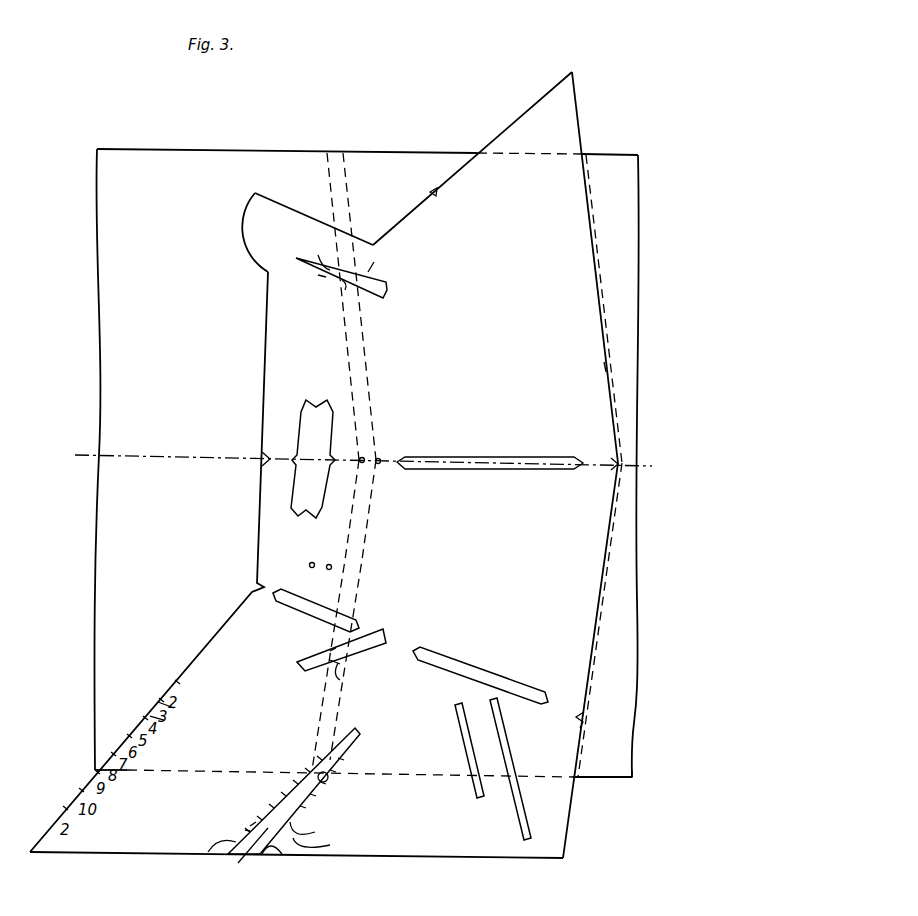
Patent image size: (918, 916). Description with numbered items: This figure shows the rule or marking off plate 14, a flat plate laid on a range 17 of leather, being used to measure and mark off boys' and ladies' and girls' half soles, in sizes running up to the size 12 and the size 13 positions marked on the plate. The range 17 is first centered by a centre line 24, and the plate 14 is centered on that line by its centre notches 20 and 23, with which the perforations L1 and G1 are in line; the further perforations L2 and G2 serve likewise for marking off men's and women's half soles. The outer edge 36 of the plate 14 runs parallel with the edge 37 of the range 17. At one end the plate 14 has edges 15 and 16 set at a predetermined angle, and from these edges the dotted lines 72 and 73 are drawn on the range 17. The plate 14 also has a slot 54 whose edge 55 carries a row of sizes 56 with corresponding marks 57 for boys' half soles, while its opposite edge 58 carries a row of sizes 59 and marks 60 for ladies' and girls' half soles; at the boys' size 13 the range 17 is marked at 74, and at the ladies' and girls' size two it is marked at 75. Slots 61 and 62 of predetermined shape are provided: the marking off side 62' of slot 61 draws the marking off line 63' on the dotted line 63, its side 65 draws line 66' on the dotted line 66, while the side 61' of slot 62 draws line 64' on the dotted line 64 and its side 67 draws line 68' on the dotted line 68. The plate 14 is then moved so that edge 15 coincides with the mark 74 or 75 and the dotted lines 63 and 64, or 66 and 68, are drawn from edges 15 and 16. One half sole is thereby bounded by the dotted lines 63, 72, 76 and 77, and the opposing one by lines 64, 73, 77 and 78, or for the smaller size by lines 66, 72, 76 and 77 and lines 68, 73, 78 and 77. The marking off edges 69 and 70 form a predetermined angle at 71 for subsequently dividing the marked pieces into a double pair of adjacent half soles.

The rule or marking off plate 14 is at (367, 463).
The range 17 is at (117, 459).
The dotted line 78 is at (455, 152).
The edge of the range 37 is at (632, 778).
The dotted line 76 is at (410, 775).
The outer edge 36 is at (435, 858).
The angle 71 is at (370, 240).
The marking off edge 70 is at (310, 212).
The marking off edge 69 is at (422, 186).
The centre notch 20 is at (258, 462).
The dotted line 73 is at (600, 292).
The edge 15 is at (598, 625).
The edge 16 is at (604, 364).
The dotted line 72 is at (590, 690).
The centre notch 23 is at (610, 458).
The centre line 24 is at (172, 458).
The dotted line 77 is at (530, 470).
The perforation L1 is at (362, 457).
The perforation G1 is at (378, 458).
The perforation L2 is at (316, 555).
The perforation G2 is at (346, 560).
The dotted line 68 is at (335, 306).
The dotted line 64 is at (374, 306).
The dotted line 66 is at (323, 615).
The dotted line 63 is at (368, 610).
The slot 62 is at (355, 278).
The marking off line 64' is at (310, 251).
The marking off side 61' is at (388, 255).
The marking off side 67 is at (318, 276).
The marking off line 68' is at (325, 294).
The marking off side 62' is at (474, 665).
The slot 61 is at (334, 632).
The marking off side 65 is at (318, 656).
The marking off line 66' is at (299, 672).
The marking off line 63' is at (350, 680).
The mark 75 is at (308, 766).
The mark 74 is at (332, 782).
The scale mark 12 is at (266, 725).
The scale mark 13 is at (259, 740).
The edge of slot 58 is at (208, 853).
The slot 54 is at (247, 856).
The edge of slot 55 is at (282, 856).
The row of sizes 56 is at (315, 832).
The marks 57 is at (321, 849).
The row of sizes 59 is at (250, 826).
The marks 60 is at (245, 830).